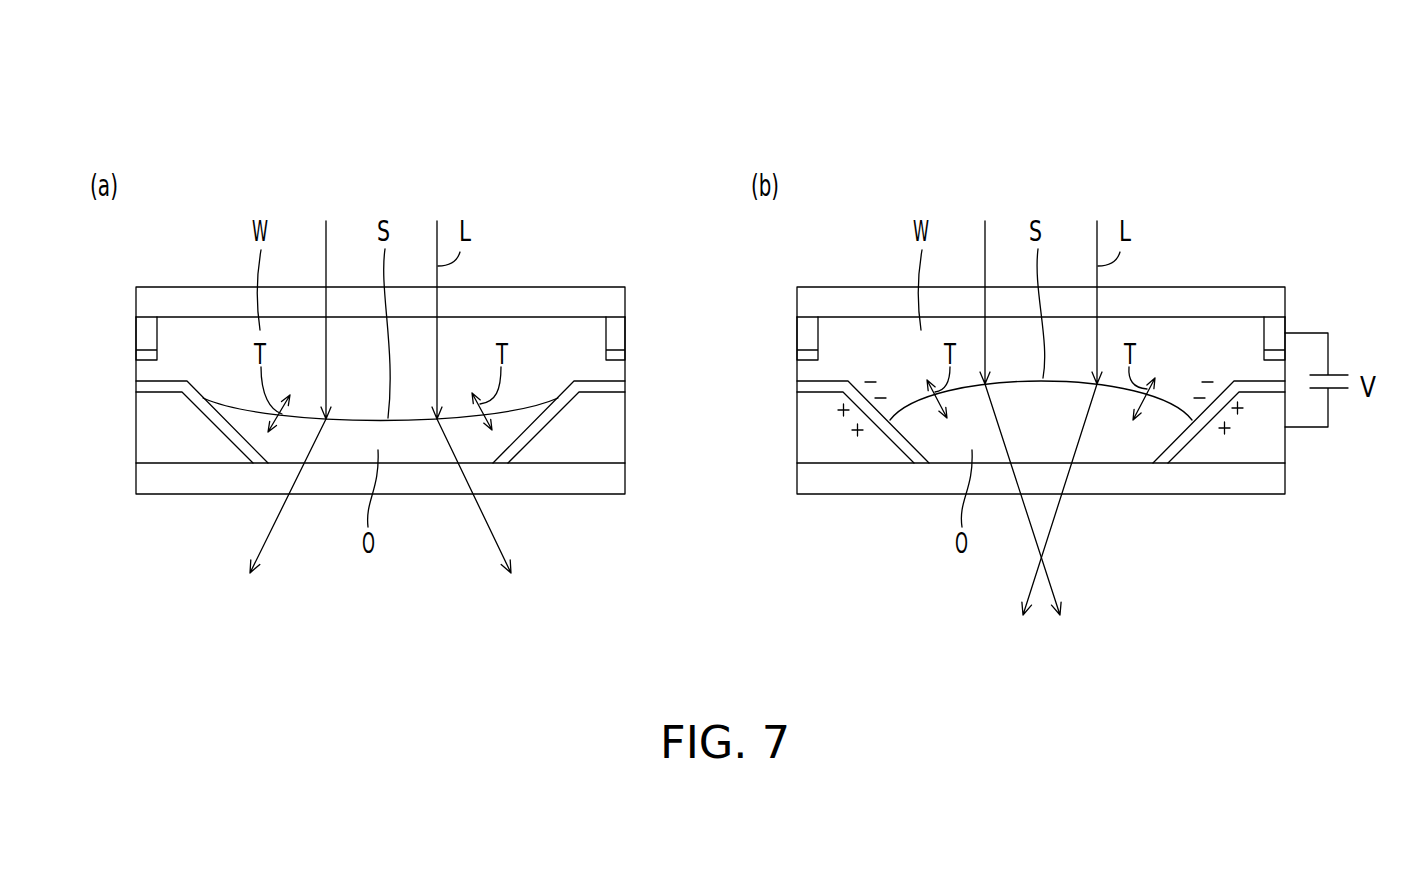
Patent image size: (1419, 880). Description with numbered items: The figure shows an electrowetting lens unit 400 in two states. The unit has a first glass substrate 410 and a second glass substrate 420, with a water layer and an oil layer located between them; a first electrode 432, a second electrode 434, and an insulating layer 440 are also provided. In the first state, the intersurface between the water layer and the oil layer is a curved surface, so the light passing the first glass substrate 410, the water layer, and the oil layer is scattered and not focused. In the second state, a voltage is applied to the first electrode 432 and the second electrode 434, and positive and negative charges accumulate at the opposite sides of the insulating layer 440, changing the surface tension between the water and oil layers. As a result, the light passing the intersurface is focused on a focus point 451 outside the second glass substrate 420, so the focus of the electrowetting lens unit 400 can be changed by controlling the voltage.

The electrowetting lens unit 400 is at (682, 597).
The first glass substrate 410 is at (153, 303).
The second glass substrate 420 is at (160, 481).
The first electrode 432 is at (148, 338).
The second electrode 434 is at (160, 443).
The insulating layer 440 is at (150, 387).
The focus point 451 is at (1059, 566).